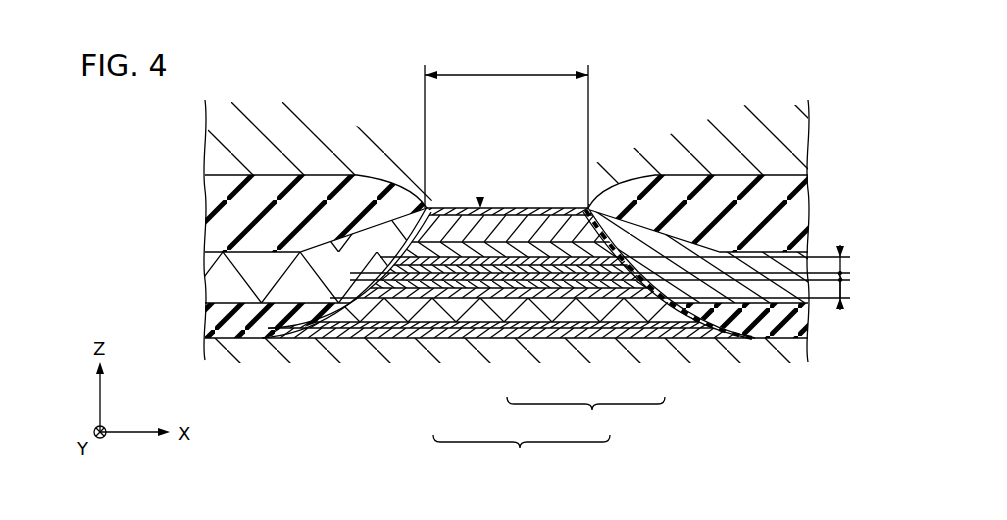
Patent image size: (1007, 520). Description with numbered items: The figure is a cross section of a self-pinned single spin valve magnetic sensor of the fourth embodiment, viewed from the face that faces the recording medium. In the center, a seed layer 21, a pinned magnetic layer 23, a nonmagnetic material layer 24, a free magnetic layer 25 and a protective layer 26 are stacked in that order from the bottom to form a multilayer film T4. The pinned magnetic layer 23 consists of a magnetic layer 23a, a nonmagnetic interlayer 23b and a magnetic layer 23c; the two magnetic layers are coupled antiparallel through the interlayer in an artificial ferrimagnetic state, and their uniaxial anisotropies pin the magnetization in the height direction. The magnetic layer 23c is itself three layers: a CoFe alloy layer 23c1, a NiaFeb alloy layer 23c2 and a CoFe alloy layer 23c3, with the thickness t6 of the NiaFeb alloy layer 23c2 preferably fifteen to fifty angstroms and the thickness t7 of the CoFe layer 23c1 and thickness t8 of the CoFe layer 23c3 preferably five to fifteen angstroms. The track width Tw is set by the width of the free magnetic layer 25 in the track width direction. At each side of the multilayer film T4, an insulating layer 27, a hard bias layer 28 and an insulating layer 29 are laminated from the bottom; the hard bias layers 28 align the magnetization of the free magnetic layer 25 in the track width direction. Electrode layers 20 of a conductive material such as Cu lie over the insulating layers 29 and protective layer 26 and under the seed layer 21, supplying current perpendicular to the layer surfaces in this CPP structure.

The electrode layer 20 is at (800, 108).
The seed layer 21 is at (412, 330).
The pinned magnetic layer 23 is at (521, 454).
The magnetic layer 23a is at (451, 316).
The nonmagnetic interlayer 23b is at (487, 300).
The magnetic layer 23c is at (586, 416).
The CoFe alloy layer 23c1 is at (556, 285).
The NiaFeb alloy layer 23c2 is at (597, 263).
The CoFe alloy layer 23c3 is at (600, 278).
The nonmagnetic material layer 24 is at (562, 245).
The free magnetic layer 25 is at (526, 235).
The protective layer 26 is at (452, 210).
The insulating layer 27 is at (243, 340).
The hard bias layer 28 is at (330, 267).
The insulating layer 29 is at (259, 200).
The track width Tw is at (506, 128).
The multilayer film T4 is at (480, 198).
The thickness of the NiaFeb alloy layer t6 is at (845, 274).
The thickness of the CoFe layer t7 is at (845, 282).
The thickness of the CoFe layer t8 is at (848, 260).